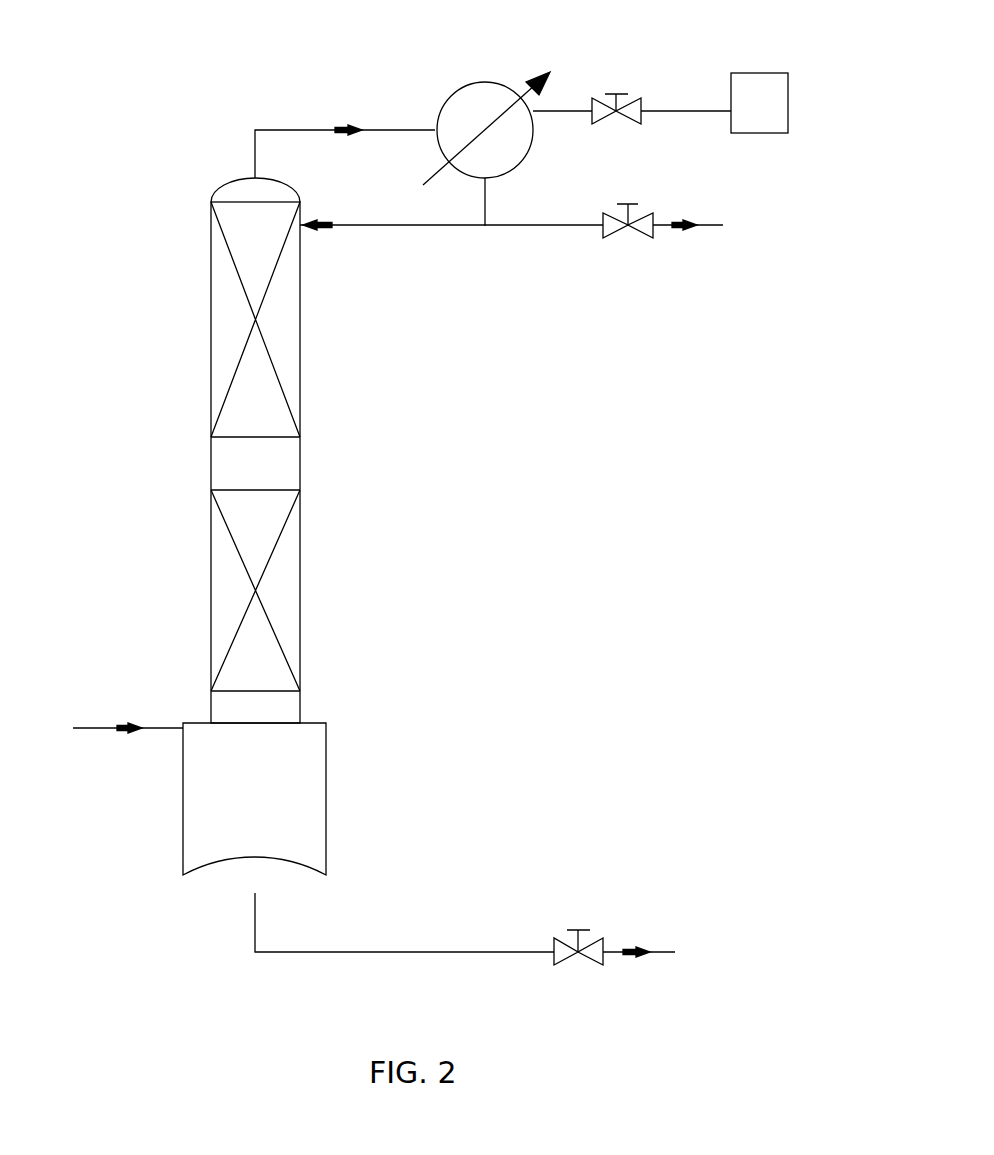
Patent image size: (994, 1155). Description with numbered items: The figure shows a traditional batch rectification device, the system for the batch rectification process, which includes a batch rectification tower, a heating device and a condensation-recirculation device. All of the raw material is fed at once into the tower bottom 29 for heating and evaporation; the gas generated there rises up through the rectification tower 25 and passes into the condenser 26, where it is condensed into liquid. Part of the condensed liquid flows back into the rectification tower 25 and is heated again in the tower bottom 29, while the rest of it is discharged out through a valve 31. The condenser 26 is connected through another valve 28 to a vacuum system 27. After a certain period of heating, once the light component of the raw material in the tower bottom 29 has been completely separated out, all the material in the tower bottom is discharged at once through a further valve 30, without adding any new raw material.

The rectification tower 25 is at (207, 467).
The condenser 26 is at (450, 93).
The vacuum system 27 is at (760, 72).
The valve 28 is at (723, 164).
The tower bottom 29 is at (182, 807).
The valve 30 is at (583, 923).
The valve 31 is at (720, 287).